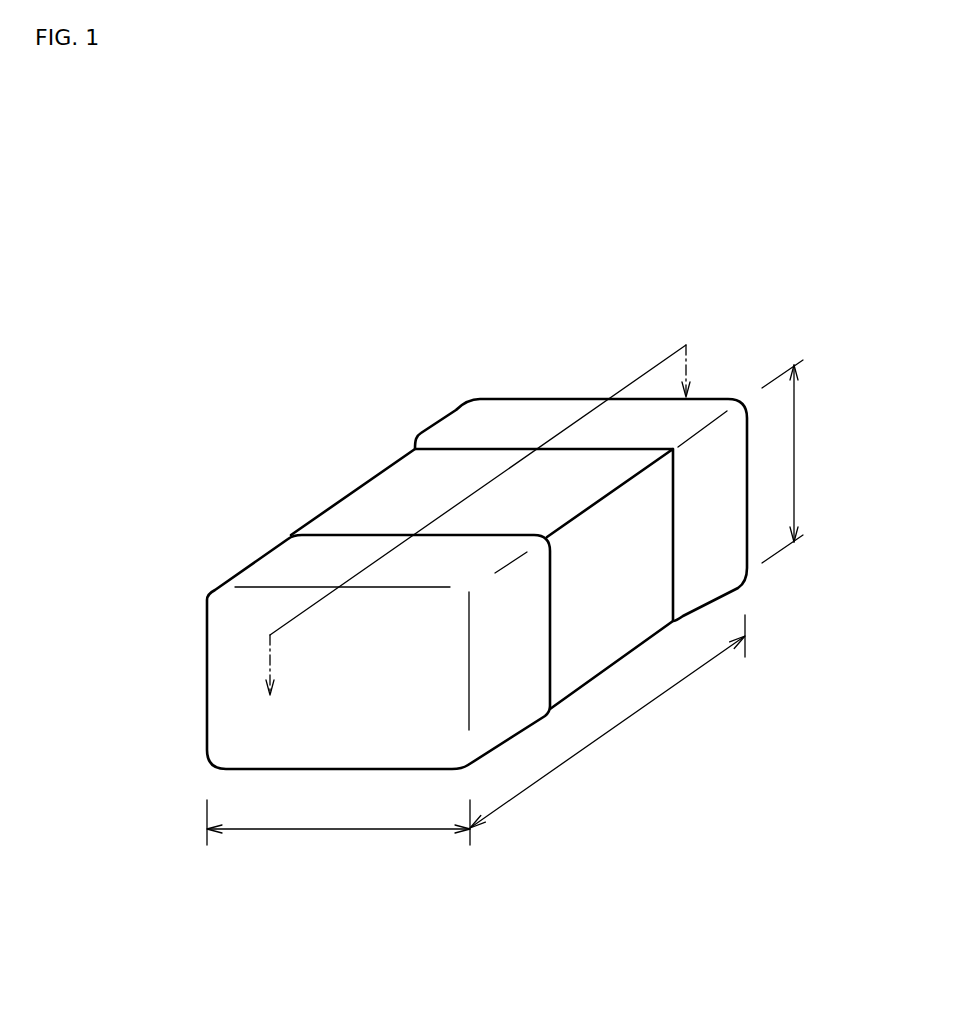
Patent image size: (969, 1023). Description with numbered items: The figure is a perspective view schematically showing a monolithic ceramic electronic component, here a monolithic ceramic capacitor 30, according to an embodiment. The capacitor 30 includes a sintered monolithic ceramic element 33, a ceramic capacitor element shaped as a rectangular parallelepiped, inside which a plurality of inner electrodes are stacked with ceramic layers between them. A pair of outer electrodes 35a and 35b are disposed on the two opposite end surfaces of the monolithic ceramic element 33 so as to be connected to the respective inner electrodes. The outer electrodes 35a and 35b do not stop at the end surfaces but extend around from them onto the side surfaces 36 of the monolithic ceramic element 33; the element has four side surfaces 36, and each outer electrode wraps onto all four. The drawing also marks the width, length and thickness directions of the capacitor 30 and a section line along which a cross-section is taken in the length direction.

The monolithic ceramic capacitor 30 is at (283, 427).
The monolithic ceramic element 33 is at (307, 523).
The outer electrode 35a is at (261, 564).
The outer electrode 35b is at (510, 417).
The side surfaces 36 is at (397, 483).